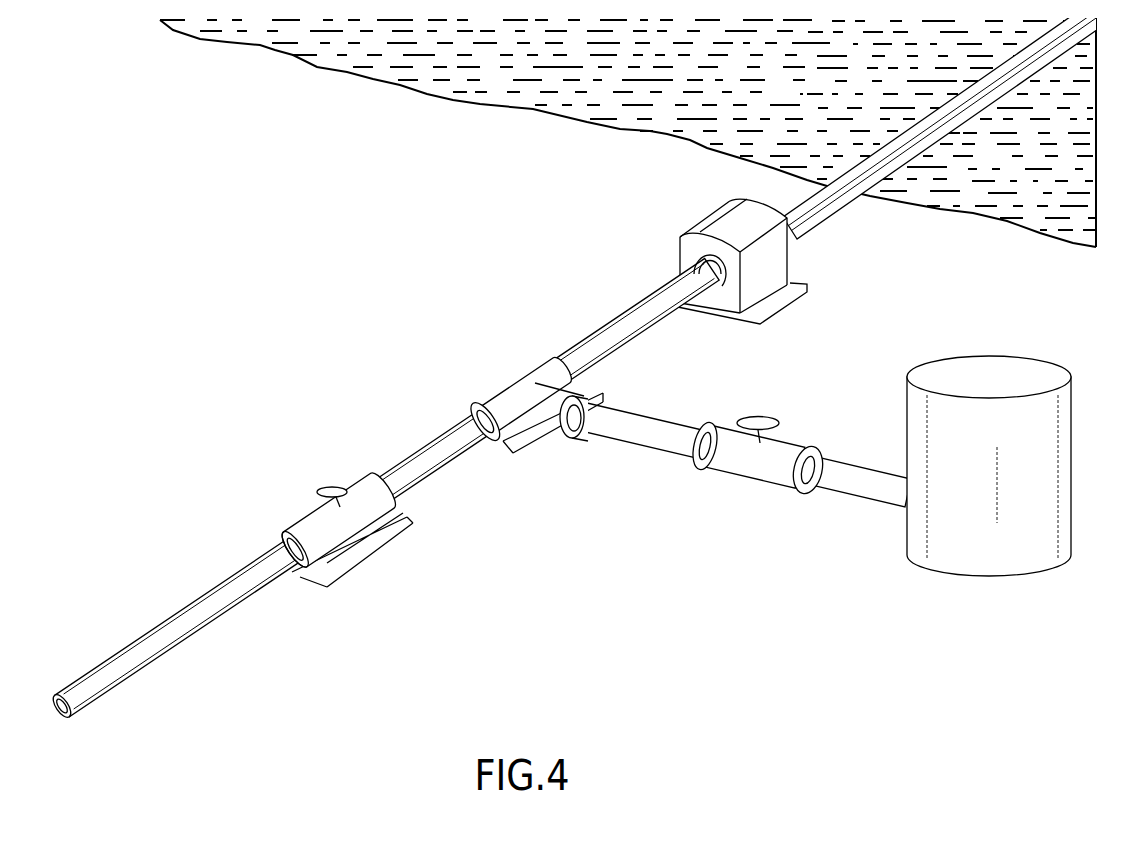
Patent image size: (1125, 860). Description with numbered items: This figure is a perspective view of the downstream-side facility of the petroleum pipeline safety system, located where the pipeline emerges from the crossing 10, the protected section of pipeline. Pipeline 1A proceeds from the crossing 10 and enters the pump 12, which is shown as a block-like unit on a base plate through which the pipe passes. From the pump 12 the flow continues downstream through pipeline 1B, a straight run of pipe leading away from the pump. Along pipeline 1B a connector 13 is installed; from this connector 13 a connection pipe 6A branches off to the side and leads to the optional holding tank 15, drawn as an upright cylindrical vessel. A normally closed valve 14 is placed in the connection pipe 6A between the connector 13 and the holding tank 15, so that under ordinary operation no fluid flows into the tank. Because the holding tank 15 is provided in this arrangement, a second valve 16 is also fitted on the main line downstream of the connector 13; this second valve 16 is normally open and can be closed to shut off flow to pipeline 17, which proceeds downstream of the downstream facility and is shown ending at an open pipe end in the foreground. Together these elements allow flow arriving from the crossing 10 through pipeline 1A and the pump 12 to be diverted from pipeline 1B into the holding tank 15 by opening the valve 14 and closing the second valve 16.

The crossing 10 is at (624, 121).
The pipeline 1A is at (828, 218).
The pipeline 1B is at (661, 331).
The pump 12 is at (784, 258).
The connector 13 is at (531, 372).
The valve 14 is at (795, 442).
The holding tank 15 is at (933, 562).
The second valve 16 is at (358, 482).
The pipeline 17 is at (213, 597).
The connection pipe 6A is at (643, 447).